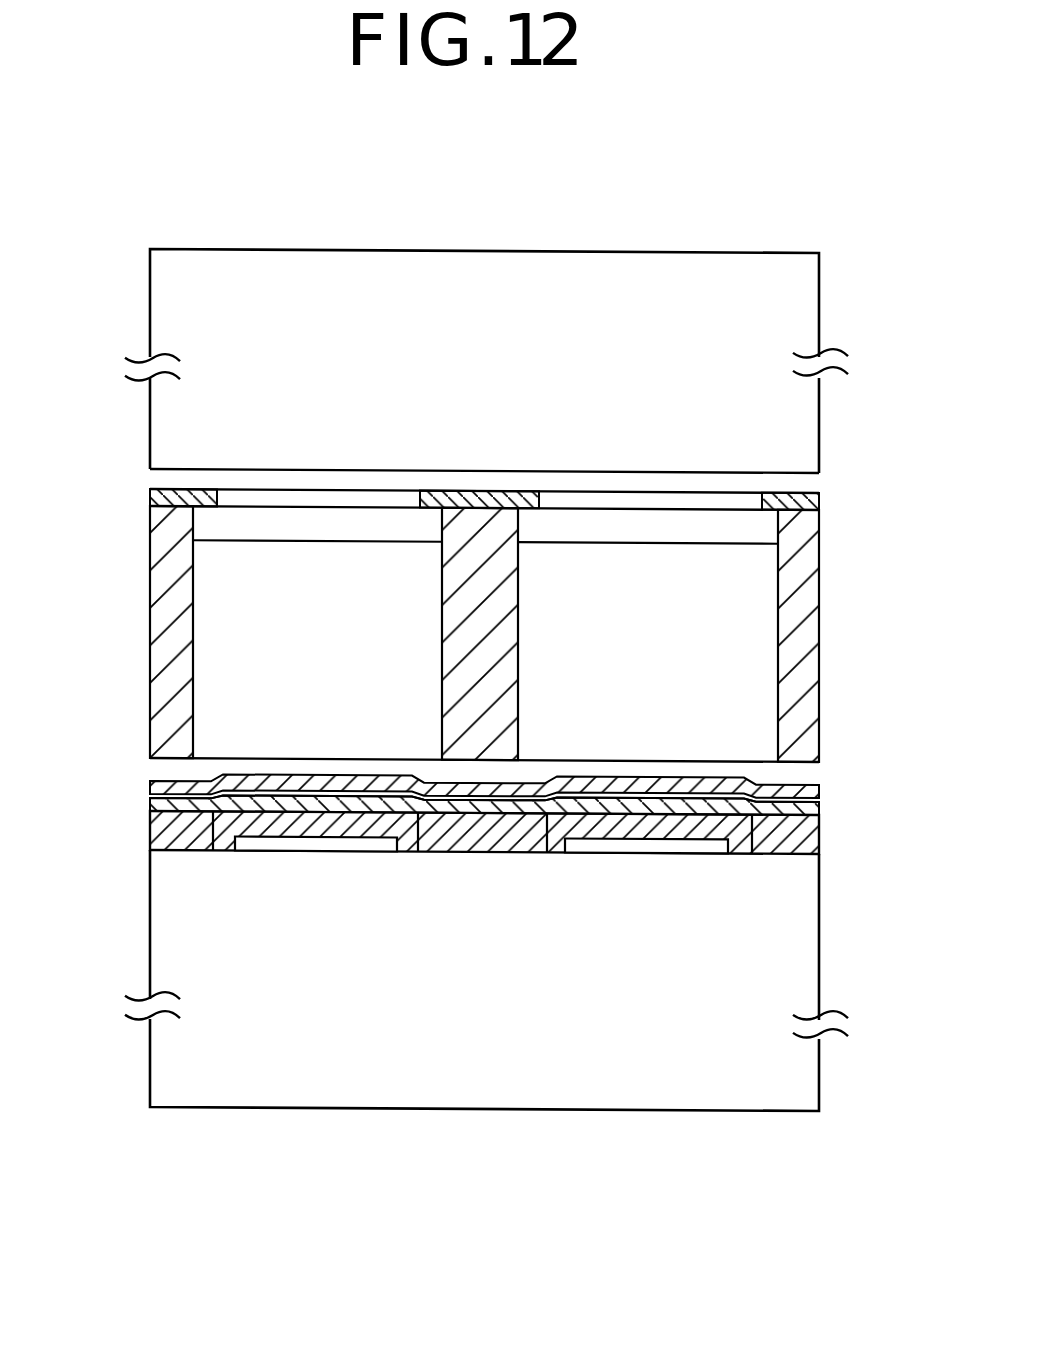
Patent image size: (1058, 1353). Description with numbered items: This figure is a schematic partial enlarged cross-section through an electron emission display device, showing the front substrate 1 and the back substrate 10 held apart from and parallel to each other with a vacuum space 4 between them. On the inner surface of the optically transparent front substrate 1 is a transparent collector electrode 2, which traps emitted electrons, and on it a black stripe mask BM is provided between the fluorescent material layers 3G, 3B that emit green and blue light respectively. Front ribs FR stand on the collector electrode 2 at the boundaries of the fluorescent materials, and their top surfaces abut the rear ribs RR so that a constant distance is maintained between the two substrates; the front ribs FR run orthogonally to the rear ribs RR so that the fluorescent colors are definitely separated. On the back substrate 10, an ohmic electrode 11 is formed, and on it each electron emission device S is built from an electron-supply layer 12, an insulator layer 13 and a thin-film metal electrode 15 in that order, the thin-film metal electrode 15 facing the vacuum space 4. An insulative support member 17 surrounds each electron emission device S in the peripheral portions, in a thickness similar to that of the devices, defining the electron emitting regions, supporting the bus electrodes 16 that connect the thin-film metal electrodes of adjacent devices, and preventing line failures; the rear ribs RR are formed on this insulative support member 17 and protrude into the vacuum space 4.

The front substrate 1 is at (808, 283).
The transparent collector electrode 2 is at (815, 473).
The black stripe mask BM is at (815, 493).
The green fluorescent material layer 3G is at (318, 532).
The blue fluorescent material layer 3B is at (623, 530).
The vacuum space 4 is at (693, 683).
The front rib FR is at (812, 663).
The rear rib RR is at (812, 771).
The thin-film metal electrode 15 is at (270, 792).
The bus electrode 16 is at (155, 790).
The insulator layer 13 is at (150, 803).
The insulative support member 17 is at (812, 826).
The ohmic electrode 11 is at (313, 849).
The electron-supply layer 12 is at (222, 838).
The electron emission device S is at (635, 872).
The back substrate 10 is at (805, 1069).